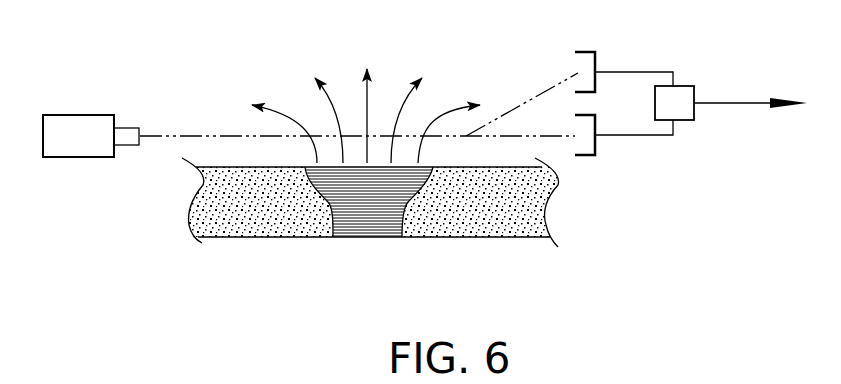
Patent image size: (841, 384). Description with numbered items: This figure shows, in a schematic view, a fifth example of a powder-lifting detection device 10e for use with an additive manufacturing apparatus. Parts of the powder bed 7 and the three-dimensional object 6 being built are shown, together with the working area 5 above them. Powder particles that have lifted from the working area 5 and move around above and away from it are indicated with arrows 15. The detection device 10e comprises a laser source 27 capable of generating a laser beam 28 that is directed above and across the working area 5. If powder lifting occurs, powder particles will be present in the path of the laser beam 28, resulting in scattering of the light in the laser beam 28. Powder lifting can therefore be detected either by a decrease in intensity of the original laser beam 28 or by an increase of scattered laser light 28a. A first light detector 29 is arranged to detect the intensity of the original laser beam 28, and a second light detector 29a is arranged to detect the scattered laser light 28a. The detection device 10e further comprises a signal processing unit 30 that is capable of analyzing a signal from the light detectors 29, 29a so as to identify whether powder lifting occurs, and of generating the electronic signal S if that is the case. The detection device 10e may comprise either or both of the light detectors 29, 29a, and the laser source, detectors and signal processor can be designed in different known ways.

The working area 5 is at (332, 167).
The three-dimensional object 6 is at (375, 222).
The powder bed 7 is at (262, 222).
The powder-lifting detection device 10e is at (705, 217).
The arrows 15 is at (452, 115).
The laser source 27 is at (88, 145).
The laser beam 28 is at (190, 135).
The scattered laser light 28a is at (531, 90).
The first light detector 29 is at (597, 148).
The second light detector 29a is at (597, 60).
The signal processing unit 30 is at (686, 97).
The electronic signal S is at (750, 119).